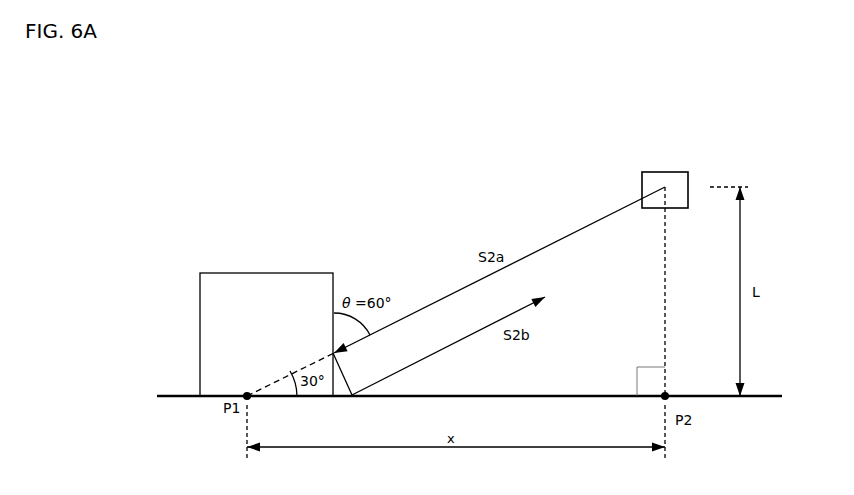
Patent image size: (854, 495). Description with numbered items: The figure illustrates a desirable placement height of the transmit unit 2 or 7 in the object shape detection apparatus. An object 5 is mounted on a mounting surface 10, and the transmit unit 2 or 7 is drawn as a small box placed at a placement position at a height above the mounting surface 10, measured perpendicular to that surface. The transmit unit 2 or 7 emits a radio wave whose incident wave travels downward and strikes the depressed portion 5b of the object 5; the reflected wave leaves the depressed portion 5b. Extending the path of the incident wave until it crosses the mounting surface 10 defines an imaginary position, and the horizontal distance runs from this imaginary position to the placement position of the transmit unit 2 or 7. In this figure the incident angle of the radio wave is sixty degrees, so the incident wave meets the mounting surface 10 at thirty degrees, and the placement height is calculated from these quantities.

The transmit unit 2 is at (683, 148).
The transmit unit 7 is at (672, 172).
The object 5 is at (272, 272).
The depressed portion 5b is at (345, 388).
The mounting surface 10 is at (182, 394).